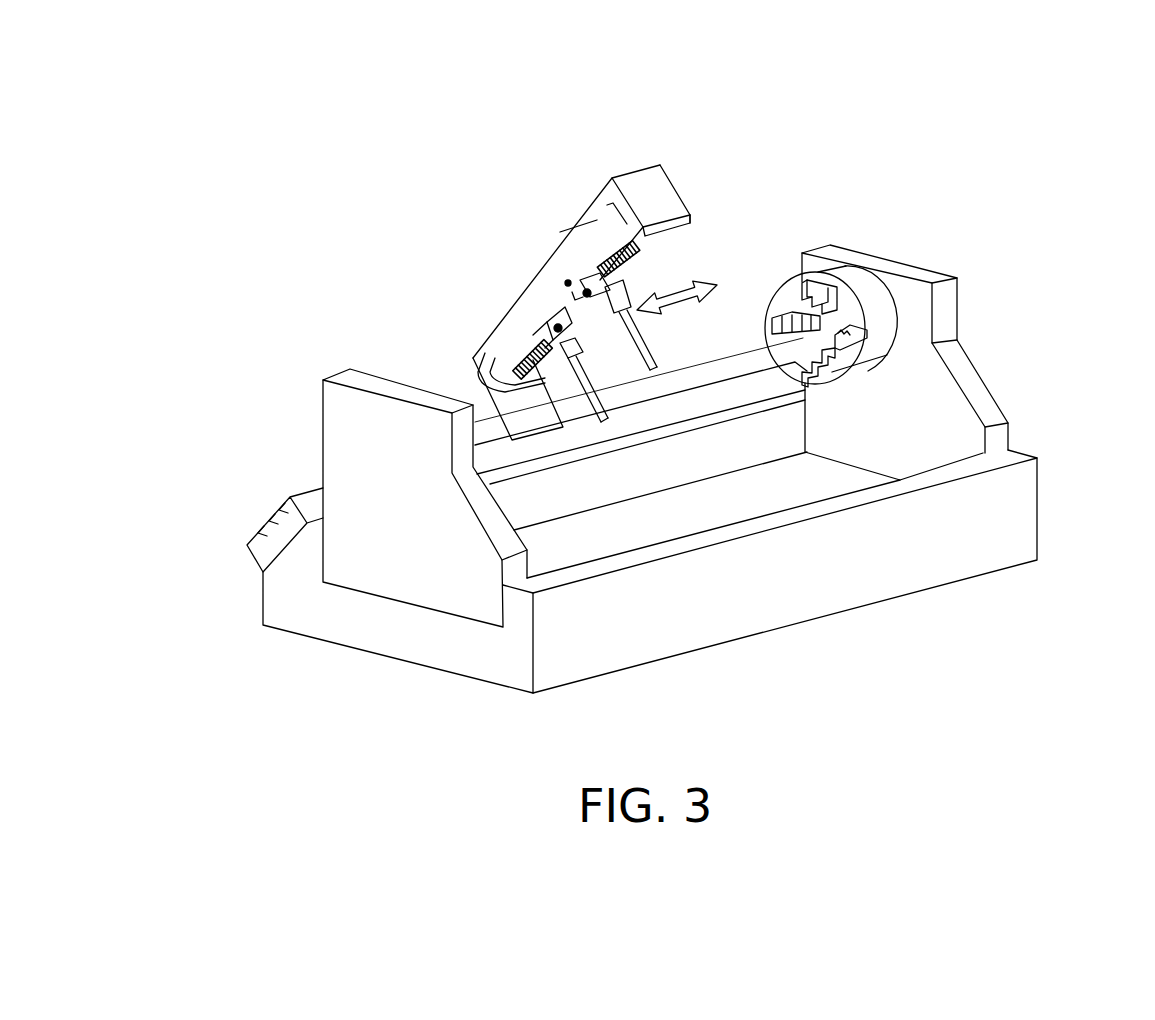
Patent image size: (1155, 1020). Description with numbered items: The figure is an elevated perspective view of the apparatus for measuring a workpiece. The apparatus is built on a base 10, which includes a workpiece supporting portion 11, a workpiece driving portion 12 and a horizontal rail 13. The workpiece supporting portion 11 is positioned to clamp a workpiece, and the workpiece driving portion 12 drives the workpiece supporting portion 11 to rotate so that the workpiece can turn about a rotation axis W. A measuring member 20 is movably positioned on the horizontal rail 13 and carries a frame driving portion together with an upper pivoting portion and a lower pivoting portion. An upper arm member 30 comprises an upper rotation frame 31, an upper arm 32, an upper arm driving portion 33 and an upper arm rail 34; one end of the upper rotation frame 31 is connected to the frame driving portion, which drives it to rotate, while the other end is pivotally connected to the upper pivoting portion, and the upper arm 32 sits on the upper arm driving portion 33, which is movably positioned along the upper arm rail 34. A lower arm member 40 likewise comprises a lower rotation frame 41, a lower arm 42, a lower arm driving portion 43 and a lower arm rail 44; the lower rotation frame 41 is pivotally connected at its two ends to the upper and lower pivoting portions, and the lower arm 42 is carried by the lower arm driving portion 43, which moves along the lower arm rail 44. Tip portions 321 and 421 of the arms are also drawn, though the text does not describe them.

The base 10 is at (1060, 512).
The workpiece supporting portion 11 is at (830, 372).
The workpiece driving portion 12 is at (853, 315).
The horizontal rail 13 is at (263, 522).
The measuring member 20 is at (552, 252).
The upper arm member 30 is at (603, 235).
The upper rotation frame 31 is at (628, 283).
The upper arm 32 is at (650, 340).
The cutting tip 321 is at (732, 314).
The upper arm driving portion 33 is at (683, 207).
The upper arm rail 34 is at (633, 263).
The lower arm member 40 is at (515, 300).
The lower rotation frame 41 is at (513, 312).
The lower arm 42 is at (547, 292).
The second cutting tip 421 is at (605, 415).
The lower arm driving portion 43 is at (535, 325).
The lower arm rail 44 is at (528, 320).
The rotation axis W is at (825, 272).